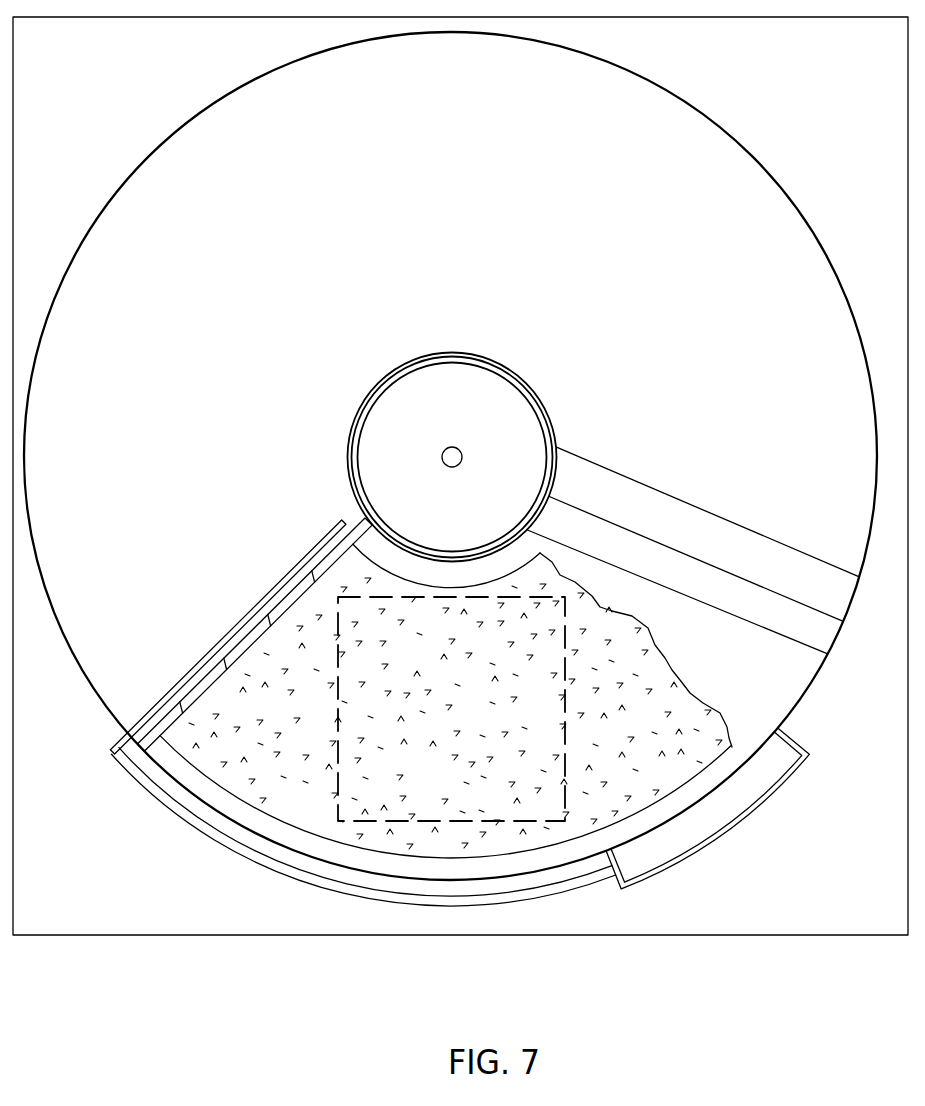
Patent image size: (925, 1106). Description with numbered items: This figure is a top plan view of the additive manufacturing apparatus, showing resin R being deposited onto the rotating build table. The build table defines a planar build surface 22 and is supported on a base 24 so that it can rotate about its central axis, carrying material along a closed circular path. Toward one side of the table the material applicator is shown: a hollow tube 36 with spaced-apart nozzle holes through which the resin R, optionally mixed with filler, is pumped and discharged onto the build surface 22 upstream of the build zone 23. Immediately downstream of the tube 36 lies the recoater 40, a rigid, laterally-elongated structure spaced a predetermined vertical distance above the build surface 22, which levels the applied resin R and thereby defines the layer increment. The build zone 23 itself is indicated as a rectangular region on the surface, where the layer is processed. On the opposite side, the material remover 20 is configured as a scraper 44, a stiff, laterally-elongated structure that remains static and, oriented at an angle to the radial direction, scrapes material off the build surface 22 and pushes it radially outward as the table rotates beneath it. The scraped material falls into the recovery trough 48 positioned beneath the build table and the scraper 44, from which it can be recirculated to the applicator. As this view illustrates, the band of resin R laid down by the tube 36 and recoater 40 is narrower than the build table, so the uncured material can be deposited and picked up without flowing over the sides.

The material remover 20 is at (705, 469).
The build surface 22 is at (694, 283).
The build zone 23 is at (407, 822).
The base 24 is at (850, 131).
The hollow tube 36 is at (197, 663).
The recoater 40 is at (347, 511).
The scraper 44 is at (771, 548).
The recovery trough 48 is at (758, 807).
The resin R is at (252, 778).